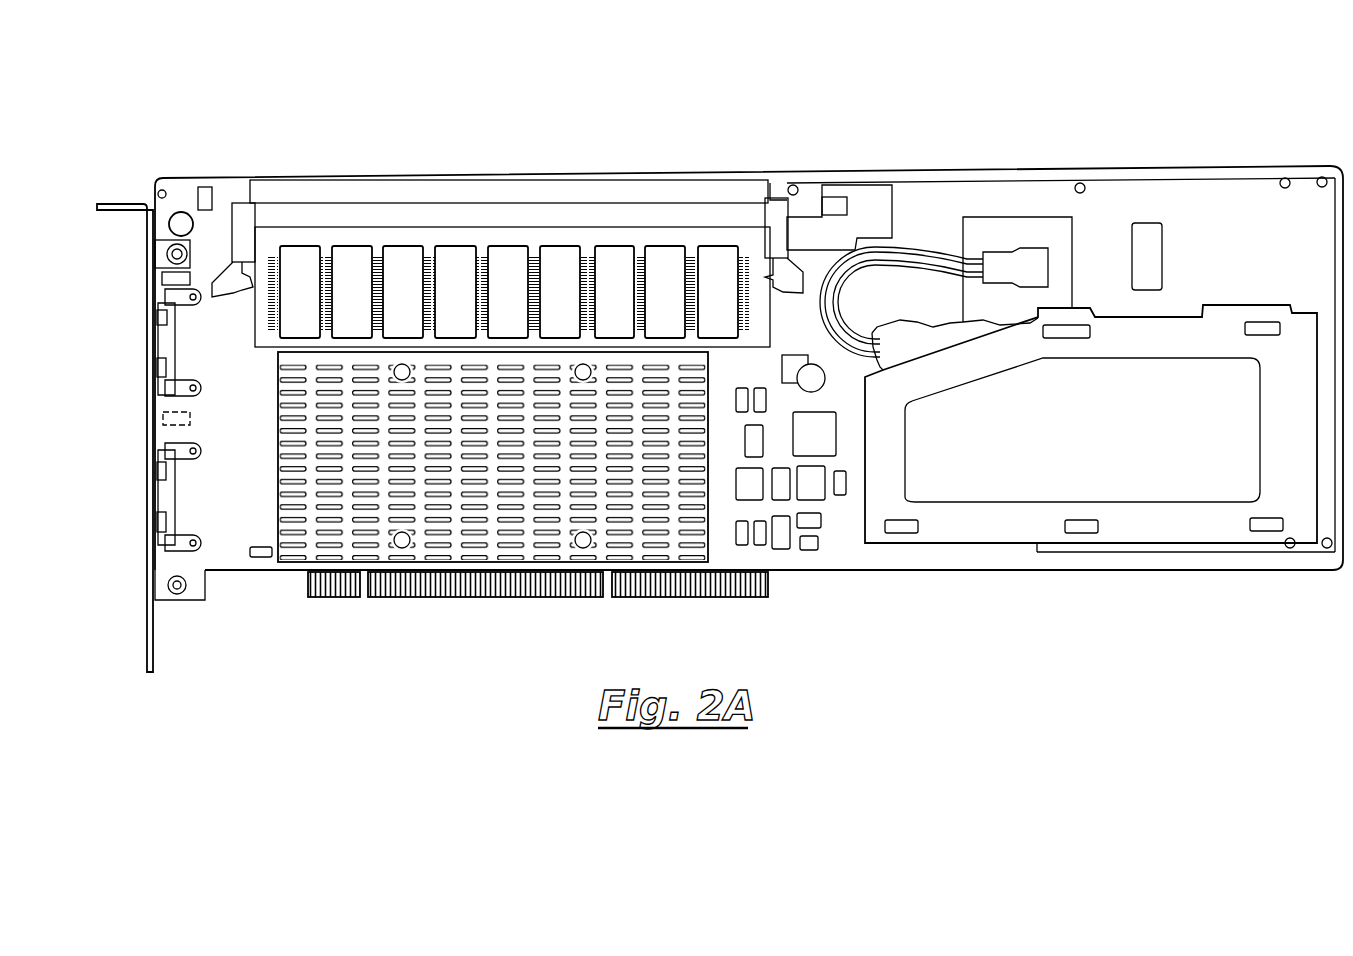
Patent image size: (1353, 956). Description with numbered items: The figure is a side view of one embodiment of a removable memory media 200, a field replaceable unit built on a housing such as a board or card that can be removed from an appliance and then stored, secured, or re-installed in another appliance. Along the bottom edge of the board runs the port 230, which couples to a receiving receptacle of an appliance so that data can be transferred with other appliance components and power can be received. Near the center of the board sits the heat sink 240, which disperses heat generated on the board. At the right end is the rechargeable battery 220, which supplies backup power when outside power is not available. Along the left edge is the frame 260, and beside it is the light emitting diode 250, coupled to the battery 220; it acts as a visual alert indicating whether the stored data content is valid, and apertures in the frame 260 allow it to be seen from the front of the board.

The removable memory media 200 is at (752, 130).
The rechargeable battery 220 is at (1175, 473).
The port 230 is at (698, 582).
The heat sink 240 is at (327, 535).
The light emitting diode 250 is at (181, 212).
The frame 260 is at (150, 620).